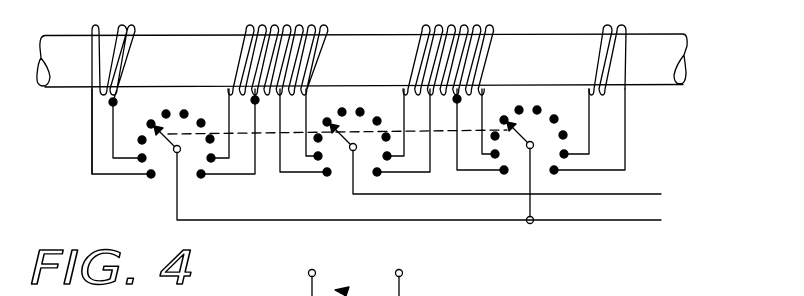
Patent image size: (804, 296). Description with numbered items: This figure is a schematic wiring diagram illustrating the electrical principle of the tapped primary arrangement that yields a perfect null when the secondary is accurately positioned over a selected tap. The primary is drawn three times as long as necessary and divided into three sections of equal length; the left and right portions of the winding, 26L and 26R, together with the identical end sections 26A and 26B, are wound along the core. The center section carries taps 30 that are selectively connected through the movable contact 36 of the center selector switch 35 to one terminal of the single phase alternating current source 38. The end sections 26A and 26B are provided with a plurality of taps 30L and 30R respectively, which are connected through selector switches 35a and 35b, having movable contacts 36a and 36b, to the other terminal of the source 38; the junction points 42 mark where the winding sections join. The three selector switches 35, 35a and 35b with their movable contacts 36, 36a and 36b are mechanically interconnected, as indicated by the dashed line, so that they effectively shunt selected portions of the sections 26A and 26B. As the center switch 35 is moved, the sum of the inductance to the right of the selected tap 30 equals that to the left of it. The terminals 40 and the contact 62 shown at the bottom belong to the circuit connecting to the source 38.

The end section of the primary 26A is at (192, 34).
The left winding section of coil 26L is at (272, 30).
The right winding section of coil 26R is at (424, 30).
The end section of the primary 26B is at (517, 33).
The taps 30L is at (169, 148).
The taps 30 is at (348, 144).
The taps 30R is at (534, 143).
The coil tap connection 42 is at (252, 103).
The selector switch 35a is at (192, 163).
The selector switch 35 is at (370, 158).
The selector switch 35b is at (546, 154).
The movable contact 36a is at (170, 148).
The movable contact 36 is at (346, 150).
The movable contact 36b is at (523, 147).
The alternating current source 38 is at (655, 205).
The terminals 40 is at (398, 269).
The contact 62 is at (351, 291).